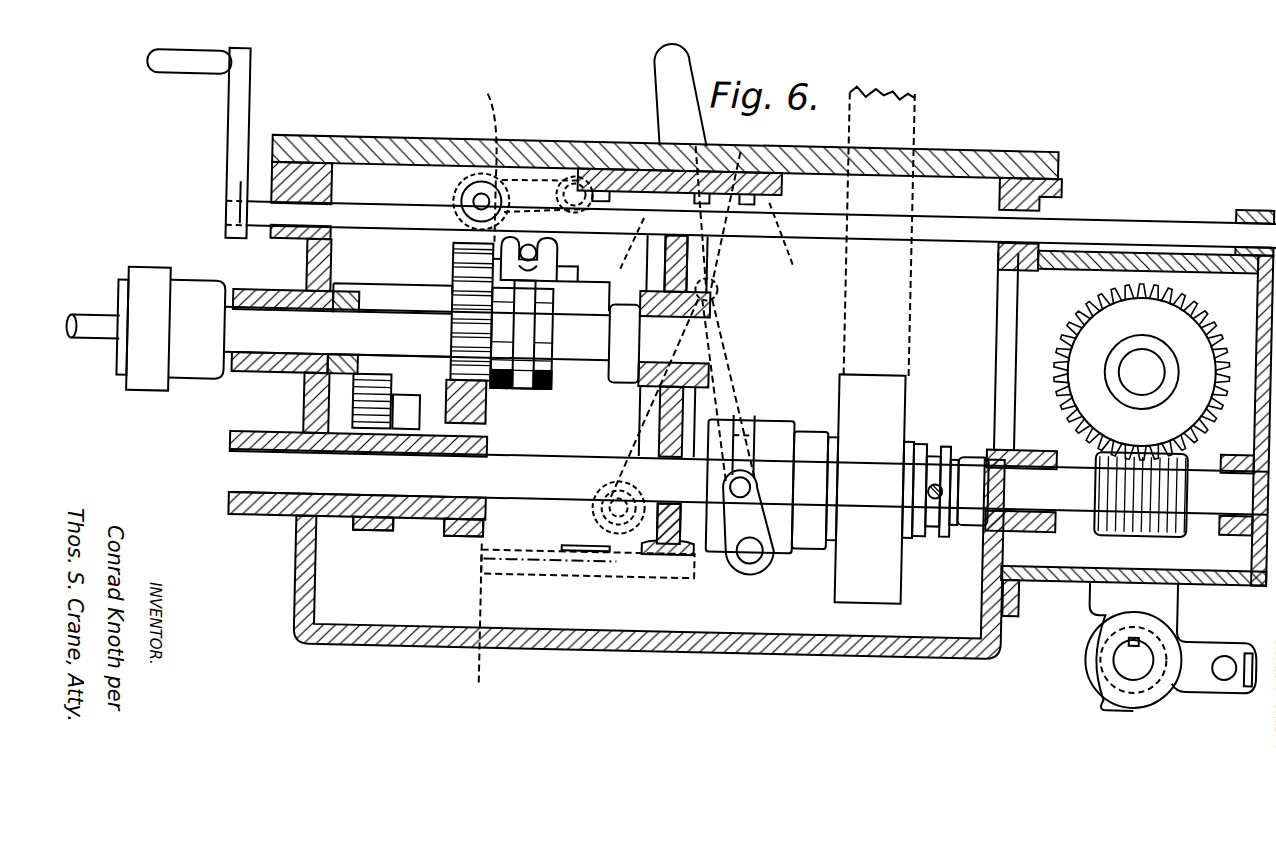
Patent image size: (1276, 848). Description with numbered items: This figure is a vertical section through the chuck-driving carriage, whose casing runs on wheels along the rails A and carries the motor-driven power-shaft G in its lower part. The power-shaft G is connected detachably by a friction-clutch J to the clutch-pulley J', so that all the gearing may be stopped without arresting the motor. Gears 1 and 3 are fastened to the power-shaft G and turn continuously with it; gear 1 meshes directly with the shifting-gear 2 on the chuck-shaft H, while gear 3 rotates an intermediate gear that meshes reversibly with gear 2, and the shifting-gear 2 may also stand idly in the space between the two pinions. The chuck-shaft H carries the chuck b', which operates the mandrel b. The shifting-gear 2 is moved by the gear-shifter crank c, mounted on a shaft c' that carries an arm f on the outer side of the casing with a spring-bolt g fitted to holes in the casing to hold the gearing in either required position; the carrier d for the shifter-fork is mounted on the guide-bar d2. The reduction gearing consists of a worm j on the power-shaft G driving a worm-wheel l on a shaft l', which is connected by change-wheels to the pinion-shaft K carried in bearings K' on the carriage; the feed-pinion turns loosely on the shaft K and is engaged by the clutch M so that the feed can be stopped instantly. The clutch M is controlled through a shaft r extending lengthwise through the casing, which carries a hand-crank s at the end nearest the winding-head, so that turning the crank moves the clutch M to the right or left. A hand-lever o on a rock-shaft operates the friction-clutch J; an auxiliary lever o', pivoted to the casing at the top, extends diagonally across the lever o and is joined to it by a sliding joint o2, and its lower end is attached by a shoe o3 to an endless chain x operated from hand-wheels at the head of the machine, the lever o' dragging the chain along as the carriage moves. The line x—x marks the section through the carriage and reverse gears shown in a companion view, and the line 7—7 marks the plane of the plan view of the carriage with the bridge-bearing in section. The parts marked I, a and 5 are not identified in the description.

The rails A is at (602, 631).
The shaft r is at (432, 212).
The hand-crank s is at (220, 129).
The mandrel b is at (92, 352).
The chuck b' is at (171, 310).
The chuck-shaft H is at (388, 322).
The guide-bar d2 is at (405, 303).
The gear I is at (450, 257).
The shifting-gear 2 is at (488, 412).
The clutch a is at (526, 391).
The gear-shifter crank c is at (535, 259).
The carrier d is at (566, 285).
The pinion 5 is at (353, 399).
The gear 3 is at (376, 537).
The gear 1 is at (466, 540).
The section line 7— 7 is at (702, 378).
The arm f is at (520, 182).
The spring-bolt g is at (570, 178).
The shaft c' is at (465, 172).
The hand-lever o is at (697, 273).
The sliding joint o2 is at (715, 288).
The auxiliary lever o' is at (619, 477).
The shoe o3 is at (568, 552).
The power-shaft G is at (585, 495).
The worm j is at (1160, 526).
The worm-wheel l is at (1128, 372).
The shaft l' is at (1131, 361).
The friction-clutch J is at (772, 504).
The clutch-pulley J' is at (913, 489).
The bearings K' is at (1150, 647).
The pinion-shaft K is at (1112, 659).
The clutch M is at (1102, 690).
The section line x— x is at (542, 386).